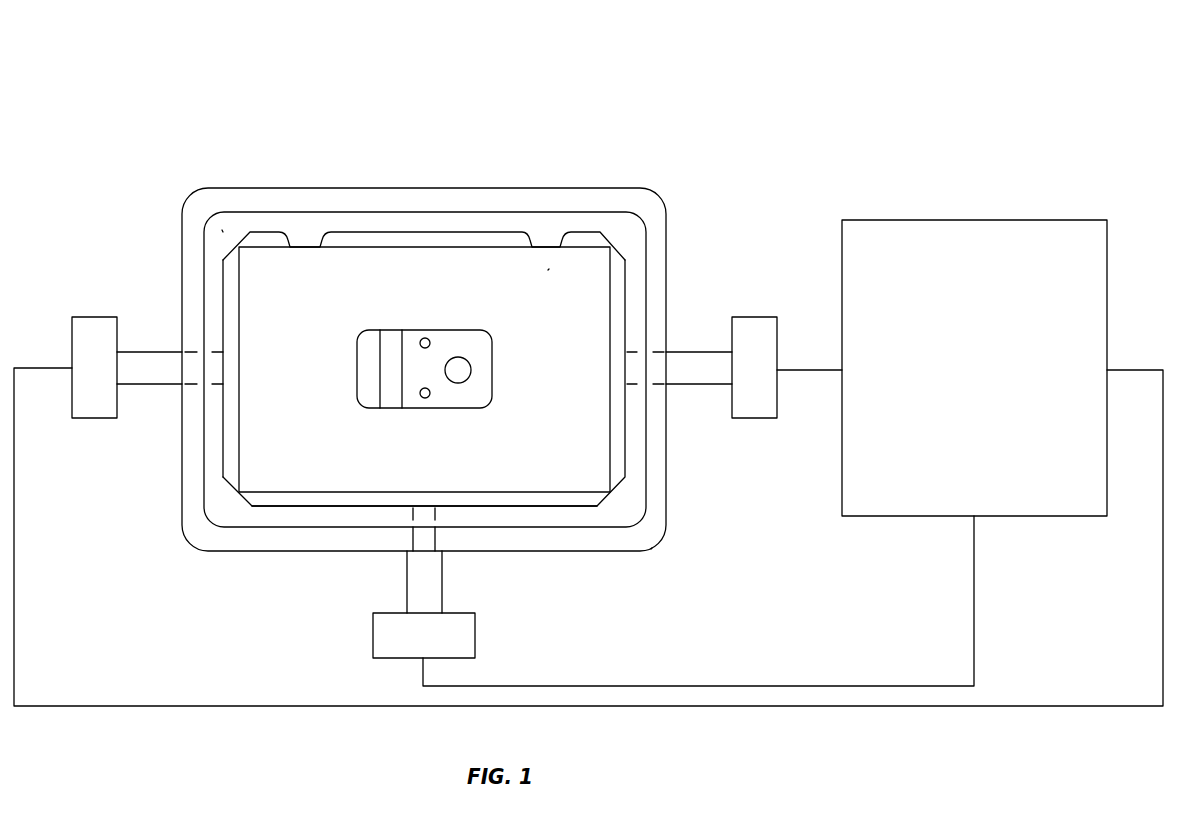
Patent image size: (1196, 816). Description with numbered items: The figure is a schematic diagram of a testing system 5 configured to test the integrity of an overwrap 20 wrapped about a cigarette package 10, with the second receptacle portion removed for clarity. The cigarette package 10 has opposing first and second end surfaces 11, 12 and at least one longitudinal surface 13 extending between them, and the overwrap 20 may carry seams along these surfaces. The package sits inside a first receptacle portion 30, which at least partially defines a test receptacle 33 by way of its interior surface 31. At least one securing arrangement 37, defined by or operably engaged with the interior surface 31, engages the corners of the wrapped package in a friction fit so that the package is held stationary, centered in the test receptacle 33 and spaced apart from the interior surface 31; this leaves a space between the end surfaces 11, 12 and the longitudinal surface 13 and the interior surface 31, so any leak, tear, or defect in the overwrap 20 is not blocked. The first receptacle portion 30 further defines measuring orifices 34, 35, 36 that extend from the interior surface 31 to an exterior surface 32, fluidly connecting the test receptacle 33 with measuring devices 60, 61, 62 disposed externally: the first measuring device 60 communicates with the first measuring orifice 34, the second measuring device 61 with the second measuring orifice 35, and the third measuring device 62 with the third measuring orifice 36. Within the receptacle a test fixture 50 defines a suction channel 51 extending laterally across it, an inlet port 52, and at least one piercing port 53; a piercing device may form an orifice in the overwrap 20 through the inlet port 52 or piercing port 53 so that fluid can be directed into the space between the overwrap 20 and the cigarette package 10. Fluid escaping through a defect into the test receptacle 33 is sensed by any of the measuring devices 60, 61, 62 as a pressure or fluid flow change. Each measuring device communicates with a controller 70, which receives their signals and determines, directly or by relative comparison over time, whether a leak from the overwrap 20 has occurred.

The testing system 5 is at (867, 73).
The cigarette package 10 is at (425, 243).
The first end surface 11 is at (613, 402).
The second end surface 12 is at (228, 304).
The longitudinal surface 13 is at (462, 495).
The overwrap 20 is at (548, 270).
The first receptacle portion 30 is at (590, 553).
The interior surface 31 is at (222, 403).
The exterior surface 32 is at (651, 549).
The test receptacle 33 is at (226, 445).
The first measuring orifice 34 is at (659, 353).
The second measuring orifice 35 is at (410, 534).
The third measuring orifice 36 is at (185, 368).
The securing arrangement 37 is at (225, 230).
The test fixture 50 is at (455, 330).
The suction channel 51 is at (388, 352).
The inlet port 52 is at (478, 368).
The piercing port 53 is at (415, 400).
The first measuring device 60 is at (753, 310).
The second measuring device 61 is at (372, 628).
The third measuring device 62 is at (92, 315).
The controller 70 is at (1027, 237).